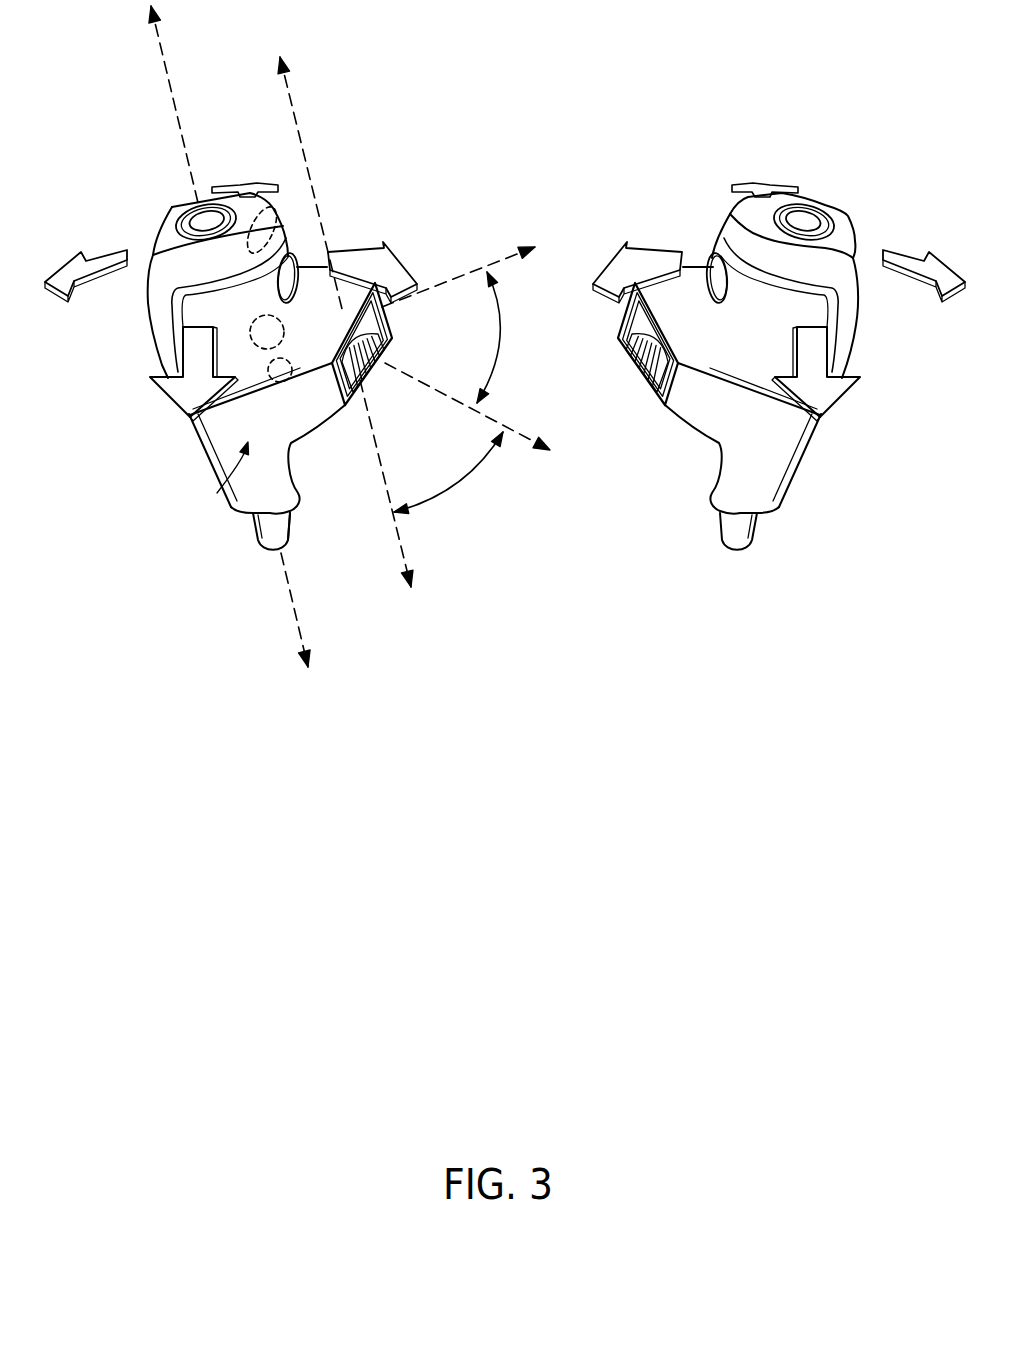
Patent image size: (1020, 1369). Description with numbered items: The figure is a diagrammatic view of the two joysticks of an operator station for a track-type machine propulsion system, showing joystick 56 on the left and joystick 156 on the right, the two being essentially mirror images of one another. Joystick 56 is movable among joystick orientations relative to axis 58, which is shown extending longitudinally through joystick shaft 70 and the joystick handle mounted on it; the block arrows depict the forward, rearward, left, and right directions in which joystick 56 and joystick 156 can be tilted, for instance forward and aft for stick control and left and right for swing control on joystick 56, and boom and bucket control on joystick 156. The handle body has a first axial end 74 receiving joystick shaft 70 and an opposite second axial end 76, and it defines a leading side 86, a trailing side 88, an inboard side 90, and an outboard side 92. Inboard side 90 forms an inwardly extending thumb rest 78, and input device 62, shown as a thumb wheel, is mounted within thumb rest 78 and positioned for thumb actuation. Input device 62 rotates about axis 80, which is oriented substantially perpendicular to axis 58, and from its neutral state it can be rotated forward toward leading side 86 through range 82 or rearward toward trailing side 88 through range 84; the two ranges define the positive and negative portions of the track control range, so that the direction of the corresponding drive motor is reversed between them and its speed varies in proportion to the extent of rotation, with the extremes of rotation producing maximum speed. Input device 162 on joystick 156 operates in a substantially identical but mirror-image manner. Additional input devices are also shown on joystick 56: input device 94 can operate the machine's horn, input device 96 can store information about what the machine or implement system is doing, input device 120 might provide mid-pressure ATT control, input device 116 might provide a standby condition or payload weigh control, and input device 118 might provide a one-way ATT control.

The joystick 56 is at (95, 228).
The axis 58 is at (162, 62).
The input device 62 is at (392, 345).
The joystick shaft 70 is at (257, 528).
The first axial end 74 is at (290, 520).
The second axial end 76 is at (237, 184).
The thumb rest 78 is at (333, 408).
The axis 80 is at (295, 118).
The range 82 is at (466, 348).
The range 84 is at (448, 473).
The leading side 86 is at (182, 200).
The trailing side 88 is at (217, 493).
The inboard side 90 is at (300, 232).
The outboard side 92 is at (140, 338).
The input device 94 is at (205, 213).
The input device 96 is at (300, 270).
The input device 116 is at (264, 317).
The input device 118 is at (279, 383).
The input device 120 is at (271, 209).
The joystick 156 is at (852, 242).
The input device 162 is at (620, 360).